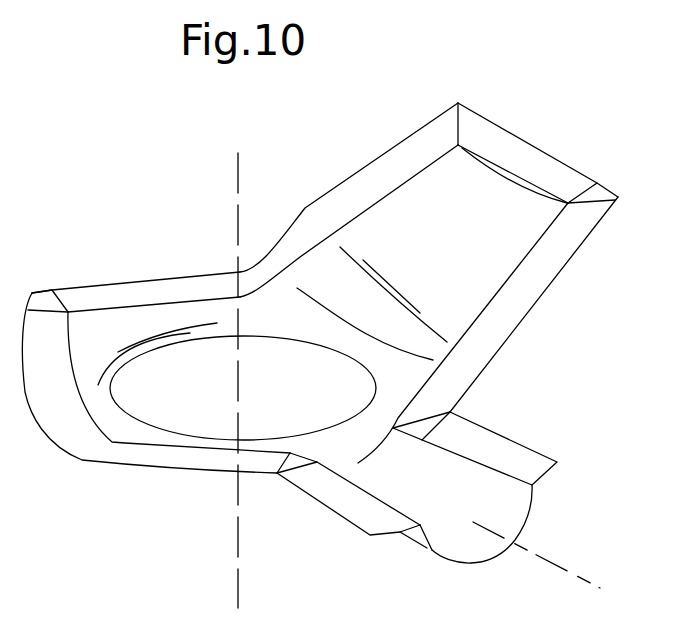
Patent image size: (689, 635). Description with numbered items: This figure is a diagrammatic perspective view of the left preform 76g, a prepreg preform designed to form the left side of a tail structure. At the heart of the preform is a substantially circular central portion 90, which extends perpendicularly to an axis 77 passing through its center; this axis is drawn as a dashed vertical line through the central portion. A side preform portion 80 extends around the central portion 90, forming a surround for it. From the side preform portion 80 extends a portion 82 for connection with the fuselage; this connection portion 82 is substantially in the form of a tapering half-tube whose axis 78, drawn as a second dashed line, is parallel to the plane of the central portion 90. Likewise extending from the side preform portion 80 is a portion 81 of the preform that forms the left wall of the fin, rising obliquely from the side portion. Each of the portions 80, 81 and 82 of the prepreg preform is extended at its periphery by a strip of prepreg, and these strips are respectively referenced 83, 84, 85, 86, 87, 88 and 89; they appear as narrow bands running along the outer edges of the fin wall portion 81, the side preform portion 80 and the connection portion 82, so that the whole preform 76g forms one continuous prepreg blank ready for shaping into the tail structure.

The left preform 76g is at (190, 253).
The axis 77 is at (236, 517).
The axis 78 is at (573, 575).
The side preform portion 80 is at (110, 353).
The portion forming the left wall of the fin 81 is at (463, 246).
The portion for connection with the fuselage 82 is at (453, 508).
The strip of prepreg 83 is at (538, 280).
The strip of prepreg 84 is at (528, 160).
The strip of prepreg 85 is at (358, 190).
The strip of prepreg 86 is at (102, 302).
The strip of prepreg 87 is at (83, 442).
The strip of prepreg 88 is at (337, 498).
The strip of prepreg 89 is at (505, 456).
The central portion 90 is at (304, 405).